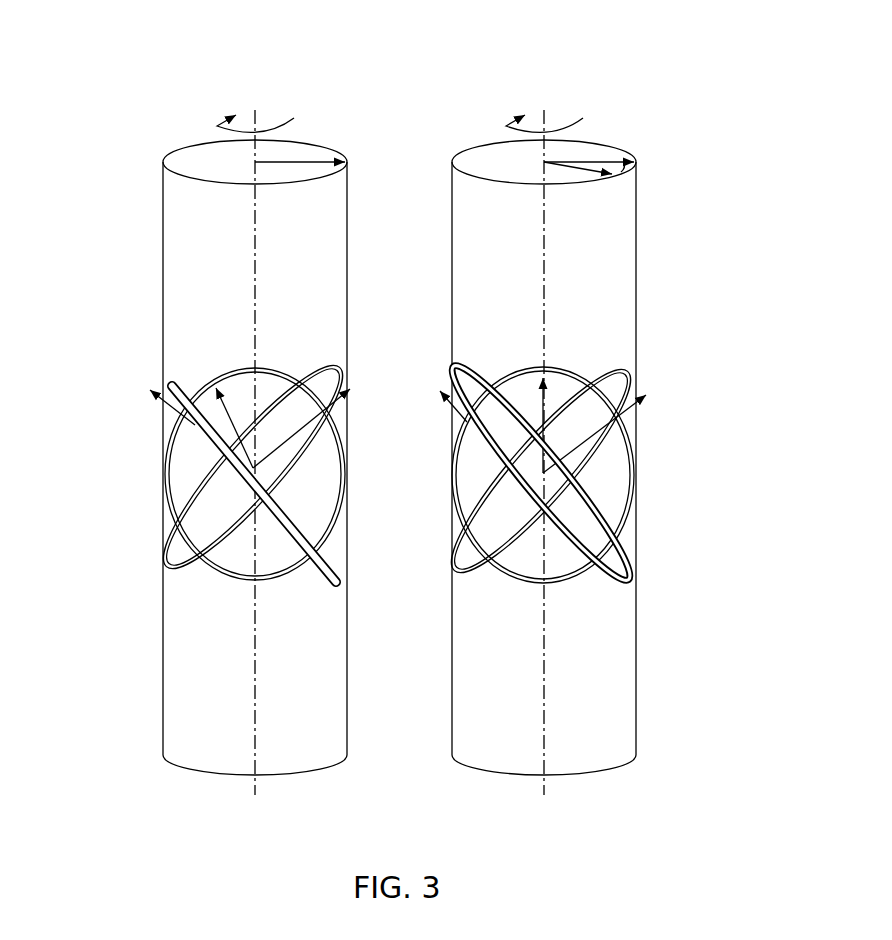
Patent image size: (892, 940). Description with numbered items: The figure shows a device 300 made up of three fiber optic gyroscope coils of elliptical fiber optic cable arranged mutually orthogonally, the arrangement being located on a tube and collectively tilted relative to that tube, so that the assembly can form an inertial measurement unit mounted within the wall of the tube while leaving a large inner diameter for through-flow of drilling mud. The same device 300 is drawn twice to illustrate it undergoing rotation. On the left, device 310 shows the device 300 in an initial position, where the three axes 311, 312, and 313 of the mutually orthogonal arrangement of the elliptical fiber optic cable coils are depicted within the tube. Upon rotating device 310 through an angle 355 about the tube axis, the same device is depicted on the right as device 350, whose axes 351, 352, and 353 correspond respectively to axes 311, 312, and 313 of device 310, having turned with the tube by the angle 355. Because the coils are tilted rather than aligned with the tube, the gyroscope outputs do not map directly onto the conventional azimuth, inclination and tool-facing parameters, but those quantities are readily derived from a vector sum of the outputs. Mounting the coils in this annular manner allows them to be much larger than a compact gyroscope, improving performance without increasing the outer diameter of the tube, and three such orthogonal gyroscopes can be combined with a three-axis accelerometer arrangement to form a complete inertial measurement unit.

The device 300 is at (121, 108).
The device in initial position 310 is at (308, 148).
The first axis 311 is at (164, 548).
The second axis 312 is at (164, 455).
The third axis 313 is at (342, 578).
The rotated device 350 is at (599, 148).
The first rotated axis 351 is at (453, 568).
The second rotated axis 352 is at (453, 448).
The third rotated axis 353 is at (630, 578).
The angle 355 is at (620, 168).